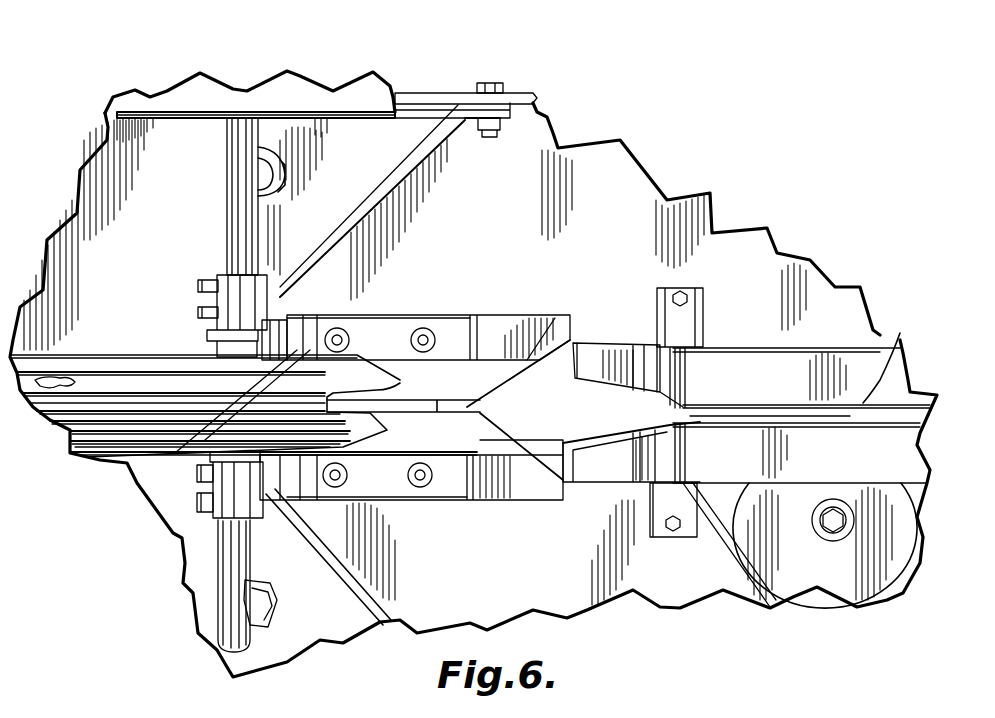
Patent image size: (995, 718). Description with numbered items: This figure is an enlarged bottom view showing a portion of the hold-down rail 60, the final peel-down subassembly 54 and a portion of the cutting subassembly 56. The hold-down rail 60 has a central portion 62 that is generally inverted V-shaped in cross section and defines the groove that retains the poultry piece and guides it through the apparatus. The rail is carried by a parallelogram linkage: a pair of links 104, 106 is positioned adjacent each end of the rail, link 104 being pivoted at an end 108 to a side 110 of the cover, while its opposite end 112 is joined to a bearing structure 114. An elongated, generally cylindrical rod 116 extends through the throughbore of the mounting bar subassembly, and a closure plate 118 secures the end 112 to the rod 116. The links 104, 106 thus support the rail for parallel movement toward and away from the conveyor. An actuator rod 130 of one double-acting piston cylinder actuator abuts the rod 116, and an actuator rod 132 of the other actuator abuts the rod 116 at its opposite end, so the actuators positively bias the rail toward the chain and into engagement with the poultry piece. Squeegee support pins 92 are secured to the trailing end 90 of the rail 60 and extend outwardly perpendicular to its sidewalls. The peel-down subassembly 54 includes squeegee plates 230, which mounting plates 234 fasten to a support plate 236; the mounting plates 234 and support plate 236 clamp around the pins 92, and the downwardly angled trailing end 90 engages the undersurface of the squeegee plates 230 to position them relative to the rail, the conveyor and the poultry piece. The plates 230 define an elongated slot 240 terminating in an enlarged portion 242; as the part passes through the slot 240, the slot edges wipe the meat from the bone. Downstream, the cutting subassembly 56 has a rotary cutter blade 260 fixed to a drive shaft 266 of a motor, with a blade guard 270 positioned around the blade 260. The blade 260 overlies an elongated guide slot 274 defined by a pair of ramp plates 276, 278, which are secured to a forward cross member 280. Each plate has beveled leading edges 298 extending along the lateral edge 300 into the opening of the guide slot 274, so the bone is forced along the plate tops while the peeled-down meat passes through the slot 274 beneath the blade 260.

The final peel-down subassembly 54 is at (472, 287).
The cutting subassembly 56 is at (811, 320).
The hold-down rail 60 is at (90, 340).
The central portion 62 is at (117, 383).
The trailing end 90 is at (406, 375).
The squeegee support pins 92 is at (230, 410).
The link 104 is at (403, 180).
The link 106 is at (350, 577).
The end 108 is at (470, 112).
The side 110 is at (520, 95).
The opposite end 112 is at (280, 240).
The bearing structure 114 is at (252, 300).
The rod 116 is at (225, 150).
The closure plate 118 is at (203, 285).
The actuator rod 130 is at (265, 150).
The actuator rod 132 is at (262, 627).
The squeegee plates 230 is at (503, 333).
The mounting plates 234 is at (380, 337).
The support plate 236 is at (553, 360).
The elongated slot 240 is at (487, 443).
The enlarged portion 242 is at (535, 408).
The rotary cutter blade 260 is at (870, 493).
The drive shaft 266 is at (822, 526).
The blade guard 270 is at (722, 550).
The guide slot 274 is at (868, 400).
The ramp plate 276 is at (860, 350).
The ramp plate 278 is at (756, 463).
The forward cross member 280 is at (687, 325).
The beveled leading edges 298 is at (590, 387).
The lateral edge 300 is at (750, 415).